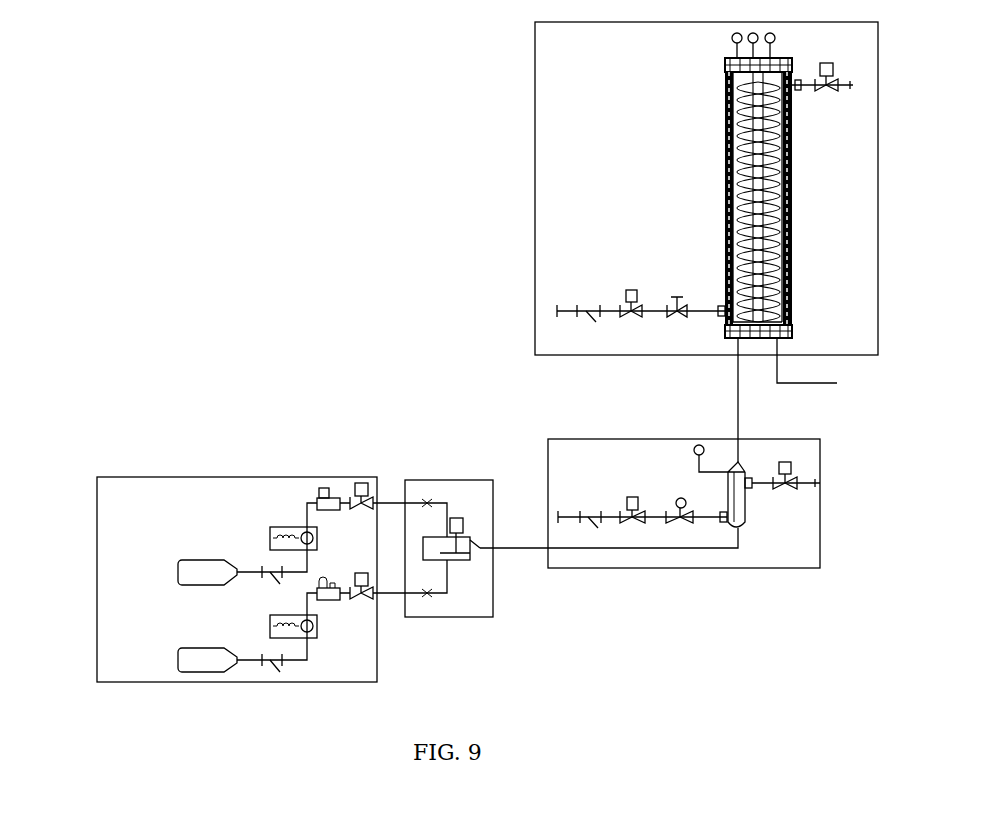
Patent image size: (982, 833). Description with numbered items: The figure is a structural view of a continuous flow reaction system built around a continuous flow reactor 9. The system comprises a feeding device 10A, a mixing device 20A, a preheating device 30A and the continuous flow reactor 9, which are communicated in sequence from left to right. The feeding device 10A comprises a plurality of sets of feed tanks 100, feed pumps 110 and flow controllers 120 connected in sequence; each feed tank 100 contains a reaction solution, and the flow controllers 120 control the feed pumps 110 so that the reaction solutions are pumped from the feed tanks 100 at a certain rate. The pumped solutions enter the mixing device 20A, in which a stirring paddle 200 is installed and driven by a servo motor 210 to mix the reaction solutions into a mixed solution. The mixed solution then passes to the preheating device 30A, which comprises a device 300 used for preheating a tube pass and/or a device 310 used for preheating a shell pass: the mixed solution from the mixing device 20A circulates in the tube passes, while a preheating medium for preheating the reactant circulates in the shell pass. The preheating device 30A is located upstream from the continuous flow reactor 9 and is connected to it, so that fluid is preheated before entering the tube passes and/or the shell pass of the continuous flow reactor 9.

The continuous flow reactor 9 is at (533, 177).
The feeding device 10A is at (224, 525).
The feed tank 100 is at (208, 560).
The feed pump 110 is at (290, 527).
The flow controller 120 is at (328, 490).
The mixing device 20A is at (440, 497).
The stirring paddle 200 is at (465, 560).
The servo motor 210 is at (457, 518).
The preheating device 30A is at (684, 558).
The device used for preheating a tube pass 300 is at (746, 525).
The device used for preheating a shell pass 310 is at (749, 497).